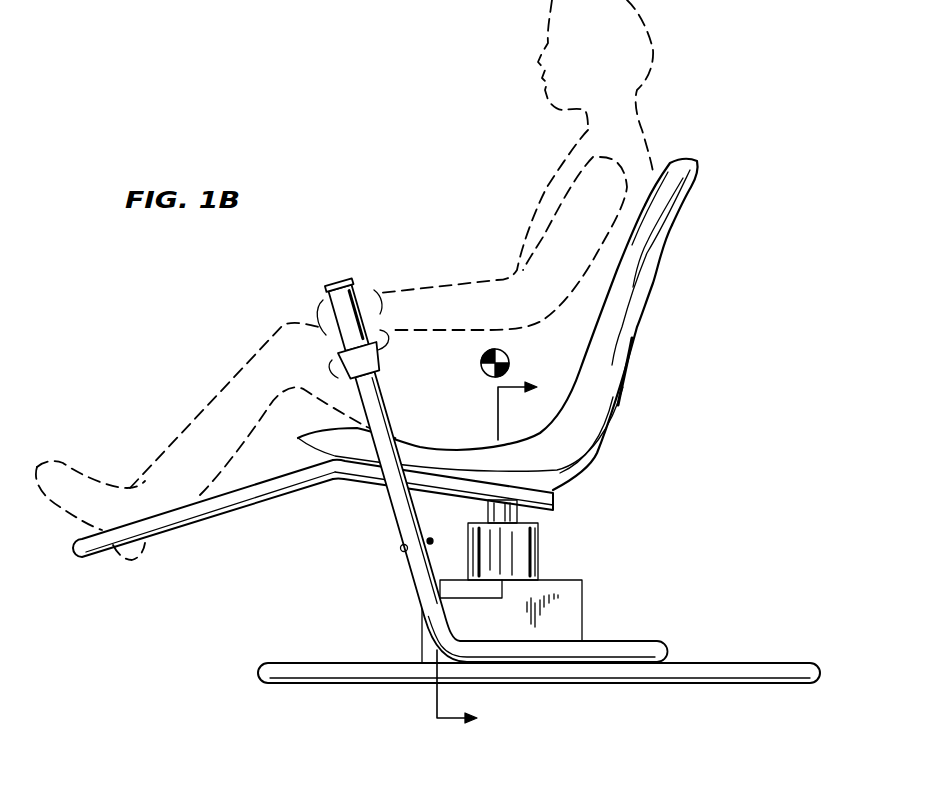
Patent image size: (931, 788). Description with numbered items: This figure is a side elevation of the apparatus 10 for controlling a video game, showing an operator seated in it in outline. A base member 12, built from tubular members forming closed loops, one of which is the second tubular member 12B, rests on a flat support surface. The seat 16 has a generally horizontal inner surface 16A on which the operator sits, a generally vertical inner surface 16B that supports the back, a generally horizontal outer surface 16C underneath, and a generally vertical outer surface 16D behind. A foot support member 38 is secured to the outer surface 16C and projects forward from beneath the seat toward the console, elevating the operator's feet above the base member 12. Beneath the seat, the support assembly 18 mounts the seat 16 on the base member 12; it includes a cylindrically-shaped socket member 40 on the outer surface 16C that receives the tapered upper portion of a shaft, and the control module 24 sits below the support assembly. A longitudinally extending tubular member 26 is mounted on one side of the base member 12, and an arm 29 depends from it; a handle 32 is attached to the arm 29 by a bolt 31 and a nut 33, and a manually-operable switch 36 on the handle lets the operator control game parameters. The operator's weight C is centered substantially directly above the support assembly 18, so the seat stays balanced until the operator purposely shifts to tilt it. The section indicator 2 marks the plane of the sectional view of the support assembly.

The apparatus 10 is at (440, 185).
The base member 12 is at (707, 640).
The second tubular member 12B is at (623, 672).
The seat 16 is at (633, 373).
The inner surface 16A is at (320, 443).
The inner surface 16B is at (660, 187).
The outer surface 16C is at (322, 478).
The outer surface 16D is at (636, 288).
The support assembly 18 is at (537, 553).
The control module 24 is at (583, 607).
The tubular member 26 is at (620, 647).
The arm 29 is at (422, 573).
The bolt 31 is at (403, 548).
The handle 32 is at (388, 407).
The nut 33 is at (430, 540).
The manually-operable switch 36 is at (338, 282).
The foot support member 38 is at (197, 520).
The socket member 40 is at (520, 517).
The operator's weight C is at (505, 355).
The section line 2- 2 is at (496, 555).